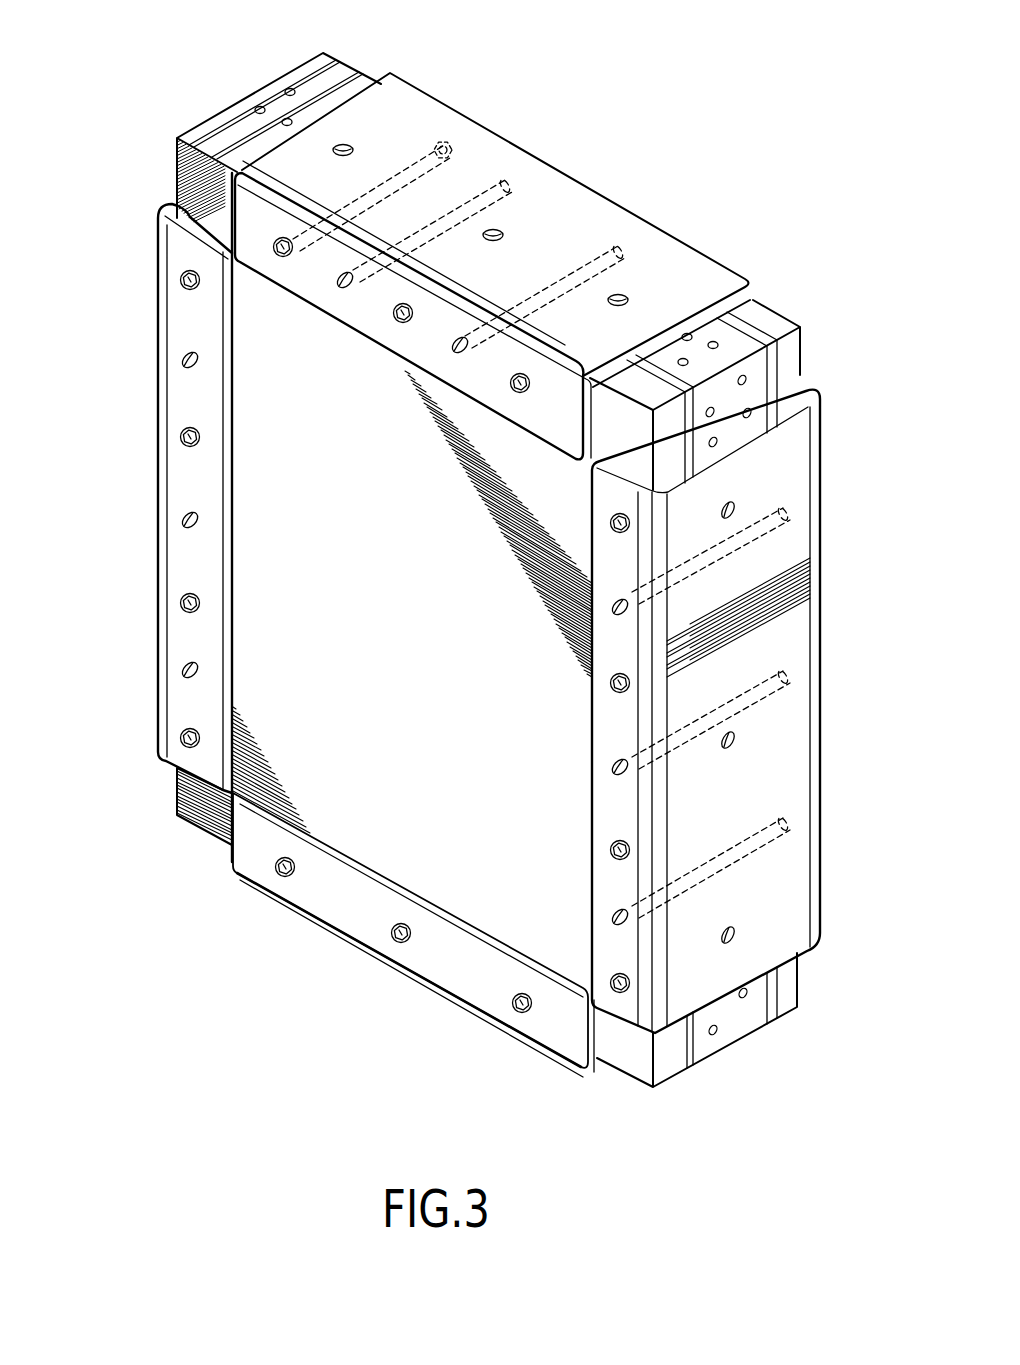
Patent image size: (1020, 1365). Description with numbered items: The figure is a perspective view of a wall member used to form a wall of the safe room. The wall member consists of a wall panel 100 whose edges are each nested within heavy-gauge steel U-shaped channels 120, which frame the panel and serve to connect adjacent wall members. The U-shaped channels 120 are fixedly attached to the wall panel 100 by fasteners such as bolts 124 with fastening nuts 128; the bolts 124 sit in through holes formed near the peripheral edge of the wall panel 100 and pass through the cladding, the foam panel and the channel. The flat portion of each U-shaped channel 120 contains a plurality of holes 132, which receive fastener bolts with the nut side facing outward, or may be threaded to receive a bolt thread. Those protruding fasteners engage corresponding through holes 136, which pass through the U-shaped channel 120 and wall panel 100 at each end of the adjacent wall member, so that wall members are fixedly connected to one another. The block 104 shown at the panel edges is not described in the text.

The wall panel 100 is at (272, 640).
The frame block 104 is at (268, 95).
The U-shaped channel 120 is at (579, 212).
The bolts 124 is at (182, 279).
The fastening nuts 128 is at (448, 146).
The holes 132 is at (623, 299).
The through holes 136 is at (494, 185).